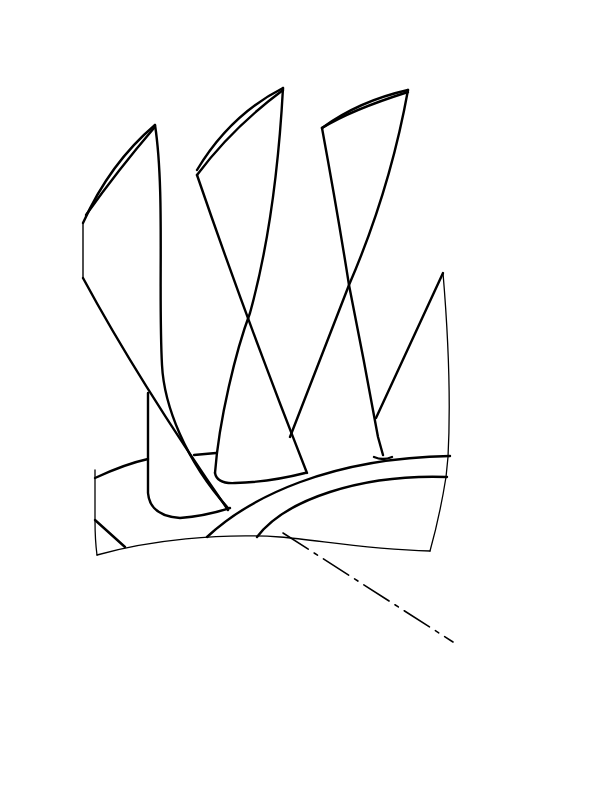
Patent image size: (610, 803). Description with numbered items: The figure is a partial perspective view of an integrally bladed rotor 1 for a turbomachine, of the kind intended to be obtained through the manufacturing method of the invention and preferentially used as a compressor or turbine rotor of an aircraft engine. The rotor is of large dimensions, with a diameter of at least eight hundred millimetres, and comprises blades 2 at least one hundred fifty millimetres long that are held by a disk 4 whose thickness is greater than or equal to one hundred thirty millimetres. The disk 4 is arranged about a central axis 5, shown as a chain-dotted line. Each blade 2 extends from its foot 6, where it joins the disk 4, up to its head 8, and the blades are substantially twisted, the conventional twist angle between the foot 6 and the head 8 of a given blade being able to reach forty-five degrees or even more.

The integrally bladed rotor 1 is at (524, 150).
The blades 2 is at (161, 160).
The disk 4 is at (280, 536).
The central axis 5 is at (407, 612).
The foot 6 is at (258, 452).
The head 8 is at (118, 176).